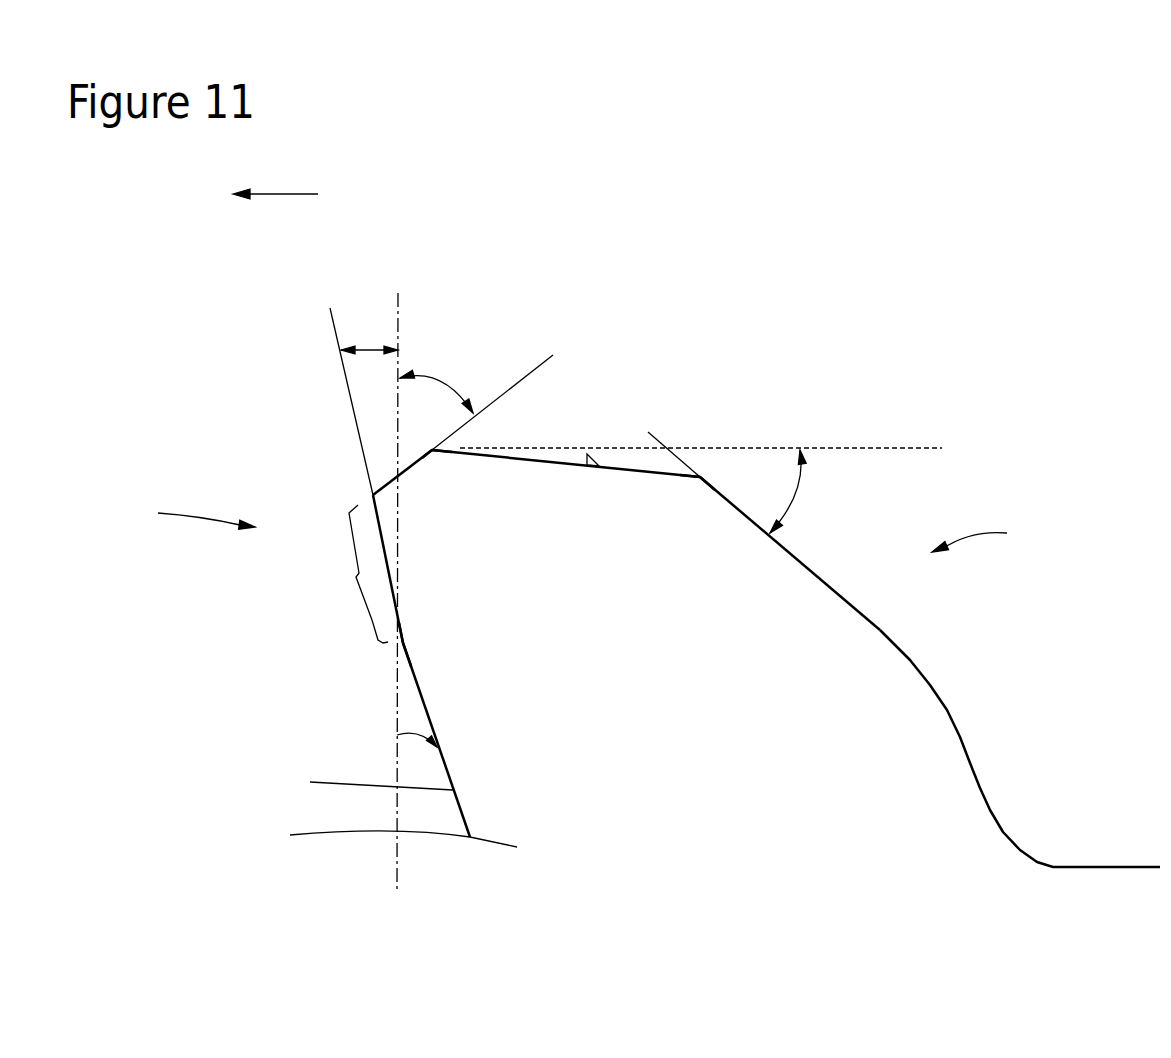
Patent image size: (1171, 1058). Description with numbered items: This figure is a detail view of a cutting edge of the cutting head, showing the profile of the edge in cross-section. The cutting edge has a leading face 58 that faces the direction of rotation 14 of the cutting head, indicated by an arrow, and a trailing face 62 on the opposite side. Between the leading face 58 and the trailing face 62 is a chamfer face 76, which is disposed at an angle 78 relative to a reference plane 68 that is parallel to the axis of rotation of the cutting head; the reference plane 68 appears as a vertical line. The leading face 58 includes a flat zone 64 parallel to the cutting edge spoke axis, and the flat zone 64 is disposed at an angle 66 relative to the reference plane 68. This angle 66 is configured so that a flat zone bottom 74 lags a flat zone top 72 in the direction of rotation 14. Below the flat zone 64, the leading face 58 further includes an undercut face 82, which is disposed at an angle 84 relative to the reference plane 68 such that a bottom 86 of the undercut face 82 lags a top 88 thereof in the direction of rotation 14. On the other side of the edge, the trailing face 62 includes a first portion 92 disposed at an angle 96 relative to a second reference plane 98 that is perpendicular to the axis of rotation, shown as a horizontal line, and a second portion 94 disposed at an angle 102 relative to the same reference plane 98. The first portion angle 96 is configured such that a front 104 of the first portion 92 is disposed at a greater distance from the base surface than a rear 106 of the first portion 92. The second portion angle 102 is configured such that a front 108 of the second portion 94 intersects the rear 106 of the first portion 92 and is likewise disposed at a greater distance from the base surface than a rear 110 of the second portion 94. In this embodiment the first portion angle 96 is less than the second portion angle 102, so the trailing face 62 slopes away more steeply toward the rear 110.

The direction of rotation 14 is at (275, 181).
The leading face 58 is at (190, 519).
The trailing face 62 is at (987, 537).
The flat zone 64 is at (372, 622).
The angle 66 is at (370, 340).
The reference plane 68 is at (401, 297).
The flat zone top 72 is at (373, 495).
The flat zone bottom 74 is at (403, 643).
The chamfer face 76 is at (380, 485).
The angle 78 is at (440, 382).
The undercut face 82 is at (365, 781).
The angle 84 is at (437, 747).
The bottom 86 is at (423, 851).
The top 88 is at (403, 643).
The first portion 92 is at (548, 449).
The second portion 94 is at (865, 618).
The angle 96 is at (605, 463).
The reference plane 98 is at (895, 448).
The angle 102 is at (793, 493).
The front 104 is at (433, 451).
The rear 106 is at (697, 478).
The front 108 is at (700, 477).
The rear 110 is at (910, 660).